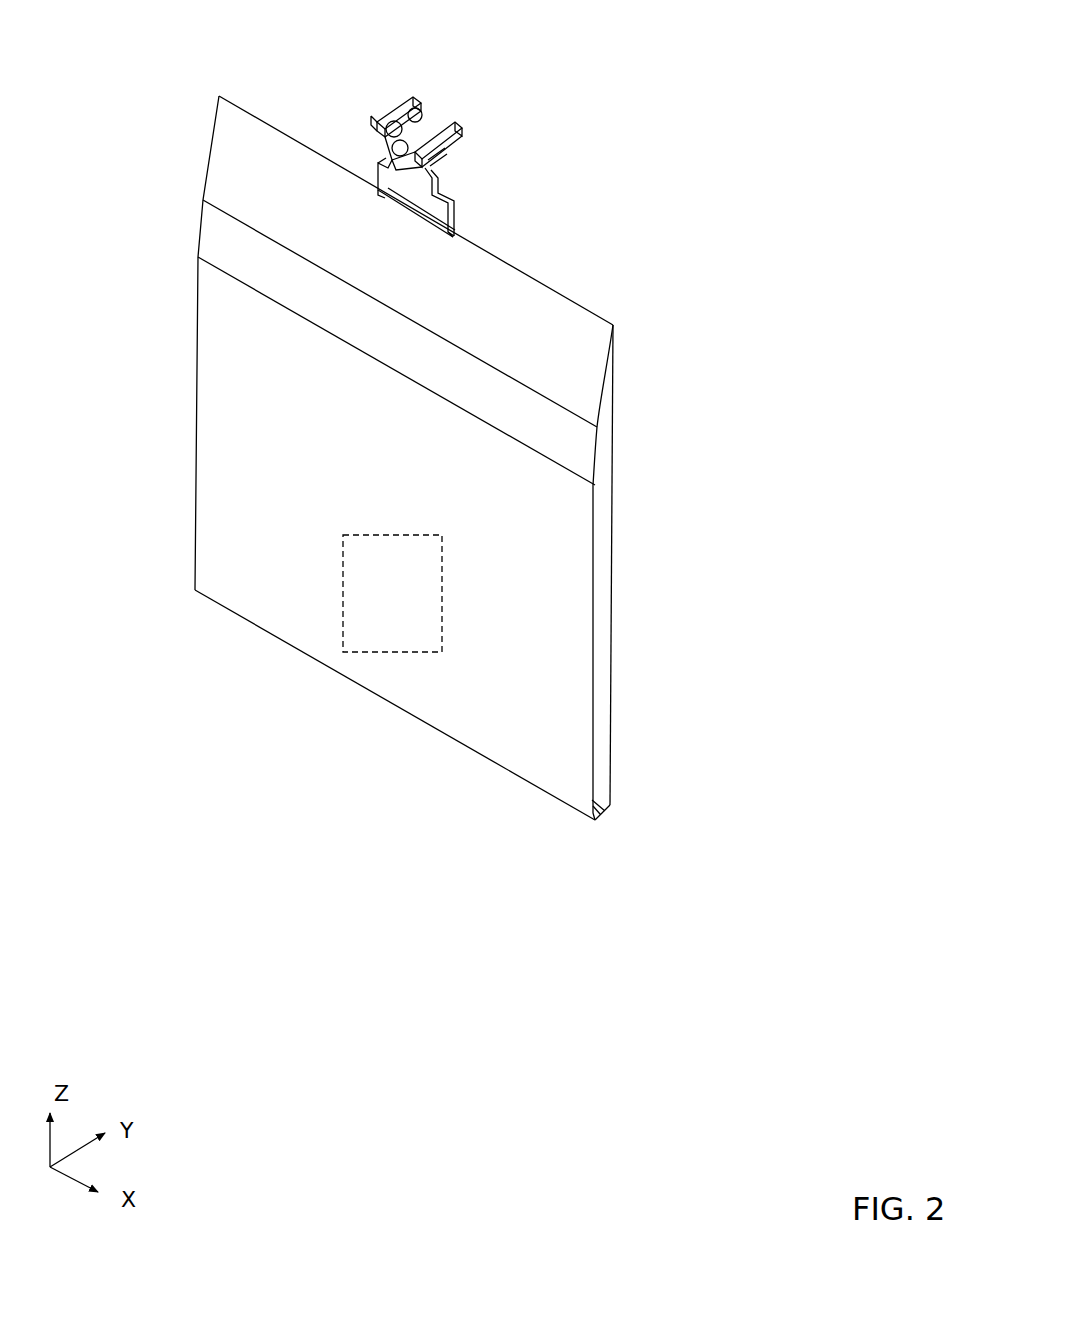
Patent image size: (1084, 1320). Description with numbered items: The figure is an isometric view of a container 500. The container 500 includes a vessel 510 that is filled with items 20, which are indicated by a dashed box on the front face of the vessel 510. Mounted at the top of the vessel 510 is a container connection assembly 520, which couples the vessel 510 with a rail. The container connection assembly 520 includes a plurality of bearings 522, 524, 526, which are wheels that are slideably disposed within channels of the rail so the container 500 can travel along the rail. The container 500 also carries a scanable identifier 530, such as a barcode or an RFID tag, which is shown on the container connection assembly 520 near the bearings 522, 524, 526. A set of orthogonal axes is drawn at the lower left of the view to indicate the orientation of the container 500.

The container 500 is at (697, 257).
The vessel 510 is at (610, 703).
The container connection assembly 520 is at (469, 128).
The bearing 522 is at (415, 103).
The bearing 524 is at (430, 132).
The bearing 526 is at (428, 127).
The scanable identifier 530 is at (443, 147).
The items 20 is at (406, 609).